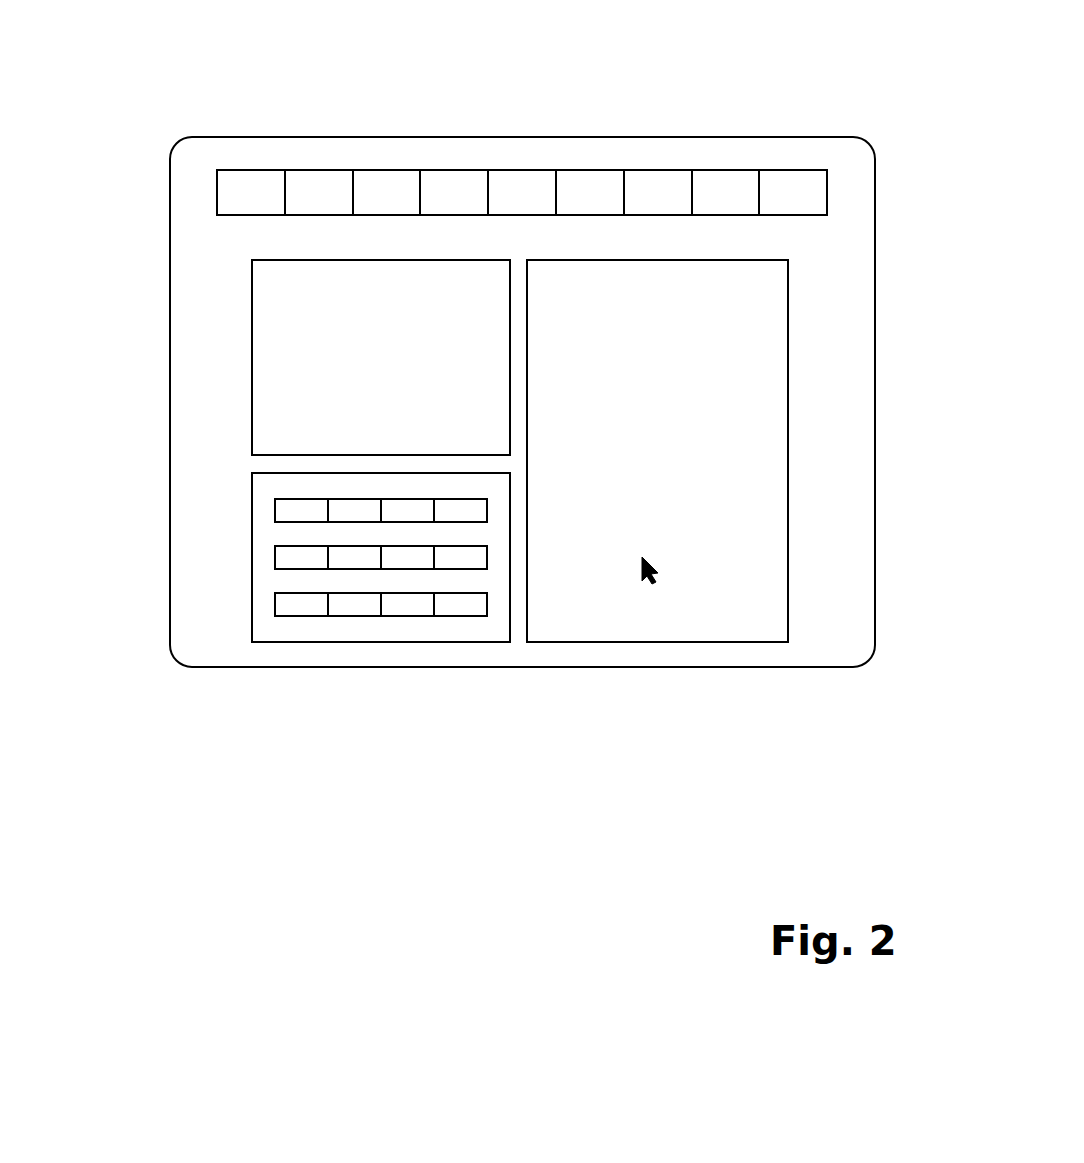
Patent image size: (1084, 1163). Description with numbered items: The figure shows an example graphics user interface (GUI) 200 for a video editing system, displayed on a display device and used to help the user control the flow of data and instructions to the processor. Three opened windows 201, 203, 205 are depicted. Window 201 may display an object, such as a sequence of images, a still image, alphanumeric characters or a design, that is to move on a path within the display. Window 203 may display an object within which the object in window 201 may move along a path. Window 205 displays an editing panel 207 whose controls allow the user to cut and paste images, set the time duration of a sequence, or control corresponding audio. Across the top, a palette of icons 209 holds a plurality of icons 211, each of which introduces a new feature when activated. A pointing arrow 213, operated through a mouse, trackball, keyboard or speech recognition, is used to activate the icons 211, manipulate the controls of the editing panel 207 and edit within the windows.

The graphics user interface 200 is at (728, 137).
The window 201 is at (250, 335).
The window 203 is at (790, 458).
The window 205 is at (253, 585).
The editing panel 207 is at (305, 558).
The palette of icons 209 is at (378, 167).
The icons 211 is at (593, 193).
The pointing arrow 213 is at (670, 610).